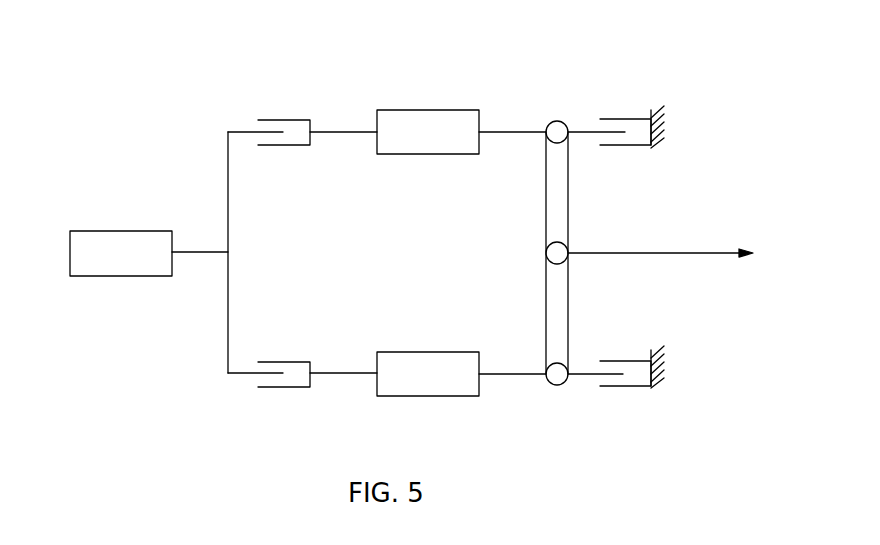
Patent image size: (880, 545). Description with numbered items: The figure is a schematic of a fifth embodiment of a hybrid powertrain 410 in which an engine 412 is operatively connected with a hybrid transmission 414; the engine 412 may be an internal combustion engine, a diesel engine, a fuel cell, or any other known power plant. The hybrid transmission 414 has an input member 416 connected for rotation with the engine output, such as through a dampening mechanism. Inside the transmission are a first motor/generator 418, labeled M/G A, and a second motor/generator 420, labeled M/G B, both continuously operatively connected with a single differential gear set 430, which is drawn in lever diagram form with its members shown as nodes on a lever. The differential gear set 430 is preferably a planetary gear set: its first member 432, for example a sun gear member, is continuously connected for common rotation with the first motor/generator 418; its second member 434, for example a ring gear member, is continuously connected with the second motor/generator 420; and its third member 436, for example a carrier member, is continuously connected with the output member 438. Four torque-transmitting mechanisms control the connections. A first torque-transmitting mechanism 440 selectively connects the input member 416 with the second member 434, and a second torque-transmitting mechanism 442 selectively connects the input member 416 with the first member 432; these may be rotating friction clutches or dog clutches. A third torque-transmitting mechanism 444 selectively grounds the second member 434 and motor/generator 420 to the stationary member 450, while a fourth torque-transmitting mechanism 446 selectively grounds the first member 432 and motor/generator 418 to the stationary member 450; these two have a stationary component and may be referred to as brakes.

The hybrid powertrain 410 is at (85, 337).
The engine 412 is at (123, 231).
The hybrid transmission 414 is at (196, 362).
The input member 416 is at (200, 252).
The first motor/generator 418 is at (425, 352).
The second motor/generator 420 is at (425, 110).
The differential gear set 430 is at (503, 207).
The first member 432 is at (549, 383).
The second member 434 is at (560, 127).
The third member 436 is at (563, 246).
The output member 438 is at (702, 252).
The first torque-transmitting mechanism 440 is at (252, 143).
The second torque-transmitting mechanism 442 is at (252, 385).
The third torque-transmitting mechanism 444 is at (594, 142).
The fourth torque-transmitting mechanism 446 is at (594, 382).
The stationary member 450 is at (655, 115).